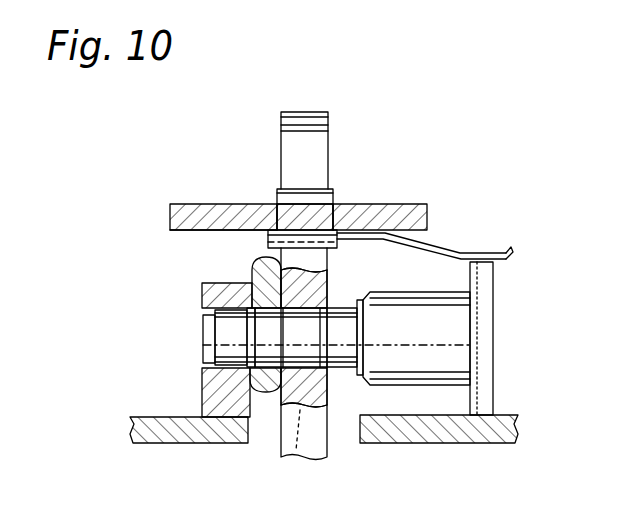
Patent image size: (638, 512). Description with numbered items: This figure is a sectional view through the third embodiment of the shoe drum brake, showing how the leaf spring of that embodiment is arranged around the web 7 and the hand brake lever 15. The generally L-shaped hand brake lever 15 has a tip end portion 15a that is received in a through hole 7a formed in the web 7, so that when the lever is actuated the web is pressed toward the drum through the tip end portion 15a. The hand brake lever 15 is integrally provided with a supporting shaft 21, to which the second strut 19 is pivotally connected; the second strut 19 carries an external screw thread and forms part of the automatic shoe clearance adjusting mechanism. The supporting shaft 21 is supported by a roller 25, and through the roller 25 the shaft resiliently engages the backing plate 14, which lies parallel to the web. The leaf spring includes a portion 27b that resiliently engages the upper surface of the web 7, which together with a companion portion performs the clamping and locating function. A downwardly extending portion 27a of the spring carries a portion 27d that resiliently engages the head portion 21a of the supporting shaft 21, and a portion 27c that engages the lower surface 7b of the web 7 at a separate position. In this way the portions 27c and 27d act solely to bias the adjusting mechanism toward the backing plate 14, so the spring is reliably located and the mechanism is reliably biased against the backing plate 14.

The web 7 is at (190, 204).
The through hole 7a is at (274, 207).
The lower surface of the web 7b is at (191, 232).
The backing plate 14 is at (433, 438).
The hand brake lever 15 is at (315, 428).
The tip end portion of the hand brake lever 15a is at (316, 143).
The second strut 19 is at (254, 262).
The supporting shaft 21 is at (429, 386).
The head portion of the supporting shaft 21a is at (495, 265).
The roller 25 is at (213, 395).
The downwardly extending portion of the leaf spring 27a is at (442, 248).
The leaf spring portion engaging the upper surface of the web 27b is at (306, 218).
The leaf spring portion engaging the lower surface of the web 27c is at (377, 239).
The leaf spring portion engaging the head portion 27d is at (490, 254).